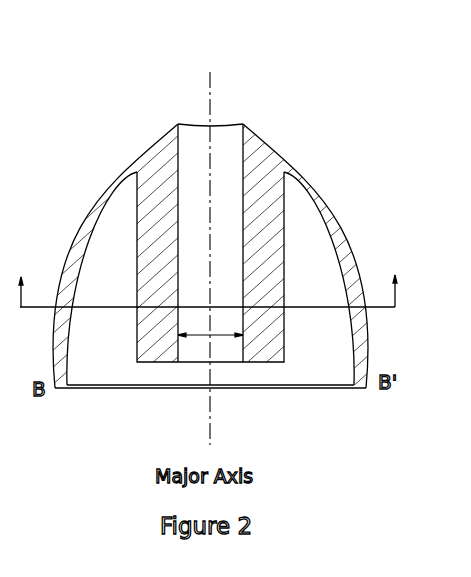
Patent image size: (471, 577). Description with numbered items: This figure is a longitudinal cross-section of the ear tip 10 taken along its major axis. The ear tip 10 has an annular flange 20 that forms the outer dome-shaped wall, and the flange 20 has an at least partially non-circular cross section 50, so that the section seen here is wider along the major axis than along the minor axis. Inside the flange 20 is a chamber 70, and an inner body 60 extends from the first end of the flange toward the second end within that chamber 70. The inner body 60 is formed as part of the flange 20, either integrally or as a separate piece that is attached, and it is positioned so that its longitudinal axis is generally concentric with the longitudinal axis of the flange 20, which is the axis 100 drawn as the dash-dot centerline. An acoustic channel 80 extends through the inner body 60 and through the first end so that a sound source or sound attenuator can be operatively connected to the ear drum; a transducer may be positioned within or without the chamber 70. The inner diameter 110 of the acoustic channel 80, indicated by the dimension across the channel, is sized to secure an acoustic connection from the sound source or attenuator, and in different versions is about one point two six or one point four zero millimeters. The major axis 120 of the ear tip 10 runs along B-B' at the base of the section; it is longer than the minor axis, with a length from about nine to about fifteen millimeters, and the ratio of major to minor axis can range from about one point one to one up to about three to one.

The ear tip 10 is at (314, 130).
The annular flange 20 is at (359, 290).
The partially non-circular cross section 50 is at (53, 306).
The inner body 60 is at (263, 243).
The chamber 70 is at (311, 273).
The acoustic channel 80 is at (228, 123).
The axis 100 is at (210, 100).
The inner diameter 110 is at (219, 340).
The major axis 120 is at (165, 388).